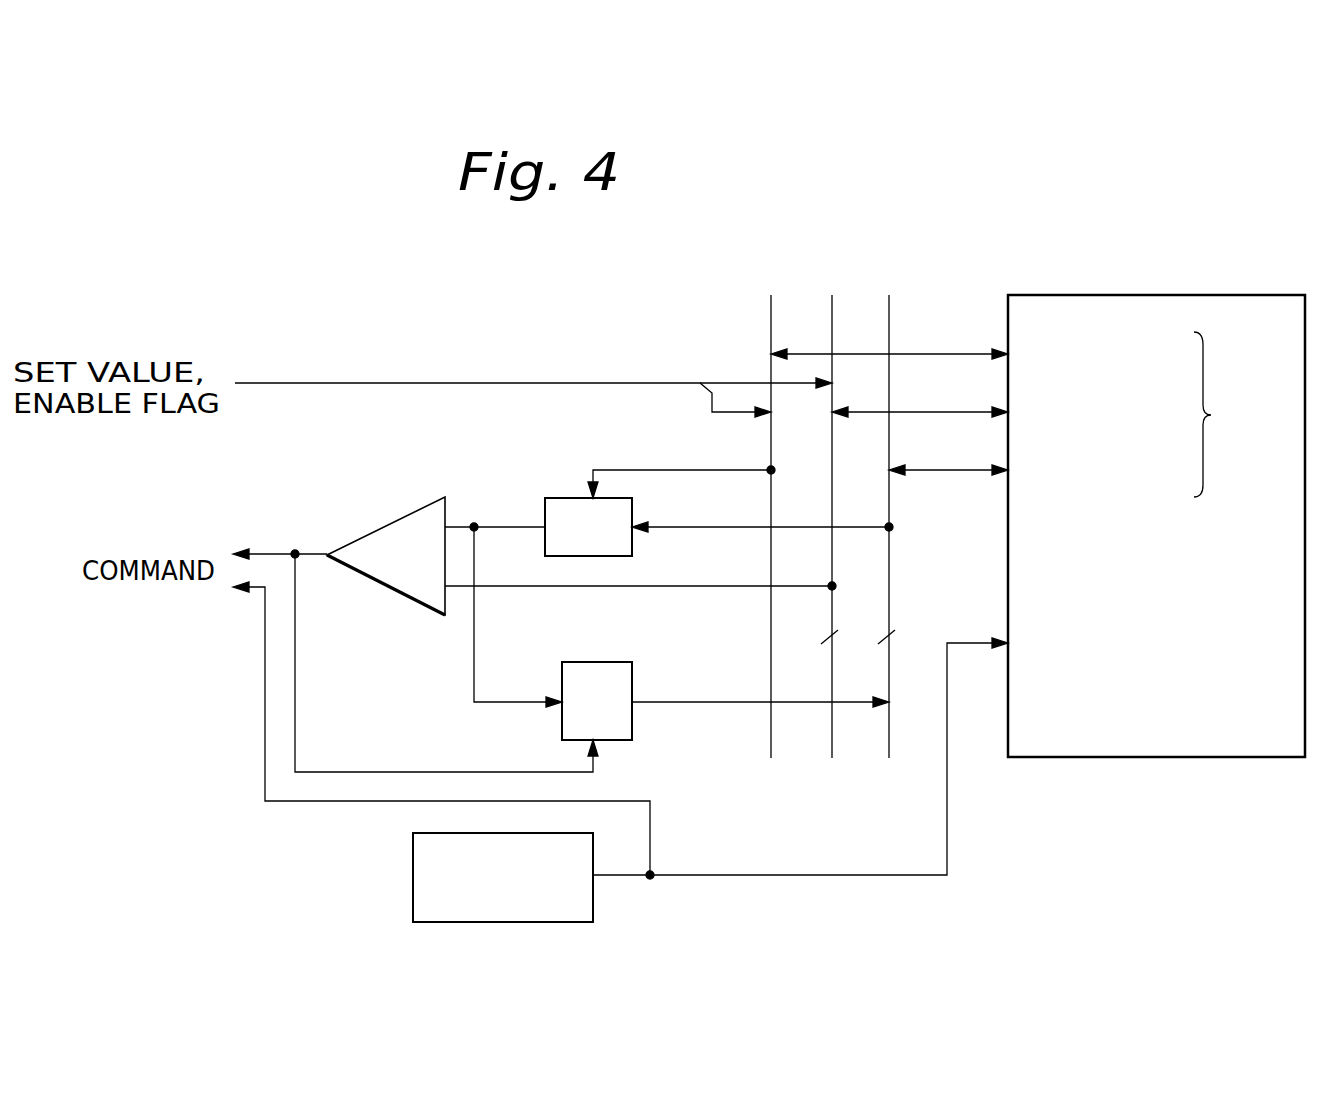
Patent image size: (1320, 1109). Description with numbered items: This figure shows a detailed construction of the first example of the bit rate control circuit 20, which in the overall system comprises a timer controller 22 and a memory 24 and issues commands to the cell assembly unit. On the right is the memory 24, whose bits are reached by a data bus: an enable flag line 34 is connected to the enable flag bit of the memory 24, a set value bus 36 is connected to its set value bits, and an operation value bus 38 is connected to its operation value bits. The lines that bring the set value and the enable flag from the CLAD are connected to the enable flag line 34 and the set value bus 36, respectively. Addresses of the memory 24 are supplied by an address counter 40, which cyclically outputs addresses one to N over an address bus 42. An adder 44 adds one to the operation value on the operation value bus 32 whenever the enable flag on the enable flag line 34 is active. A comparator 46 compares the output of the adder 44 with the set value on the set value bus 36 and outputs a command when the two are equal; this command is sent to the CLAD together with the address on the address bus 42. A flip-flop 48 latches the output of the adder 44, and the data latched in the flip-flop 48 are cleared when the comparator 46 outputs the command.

The bit rate control circuit 20 is at (877, 211).
The timer controller 22 is at (655, 334).
The memory 24 is at (1212, 295).
The operation value bus 32 is at (844, 517).
The enable flag line 34 is at (767, 745).
The set value bus 36 is at (829, 745).
The operation value bus 38 is at (887, 745).
The address counter 40 is at (413, 885).
The address bus 42 is at (895, 878).
The adder 44 is at (565, 497).
The comparator 46 is at (398, 519).
The flip-flop 48 is at (597, 662).